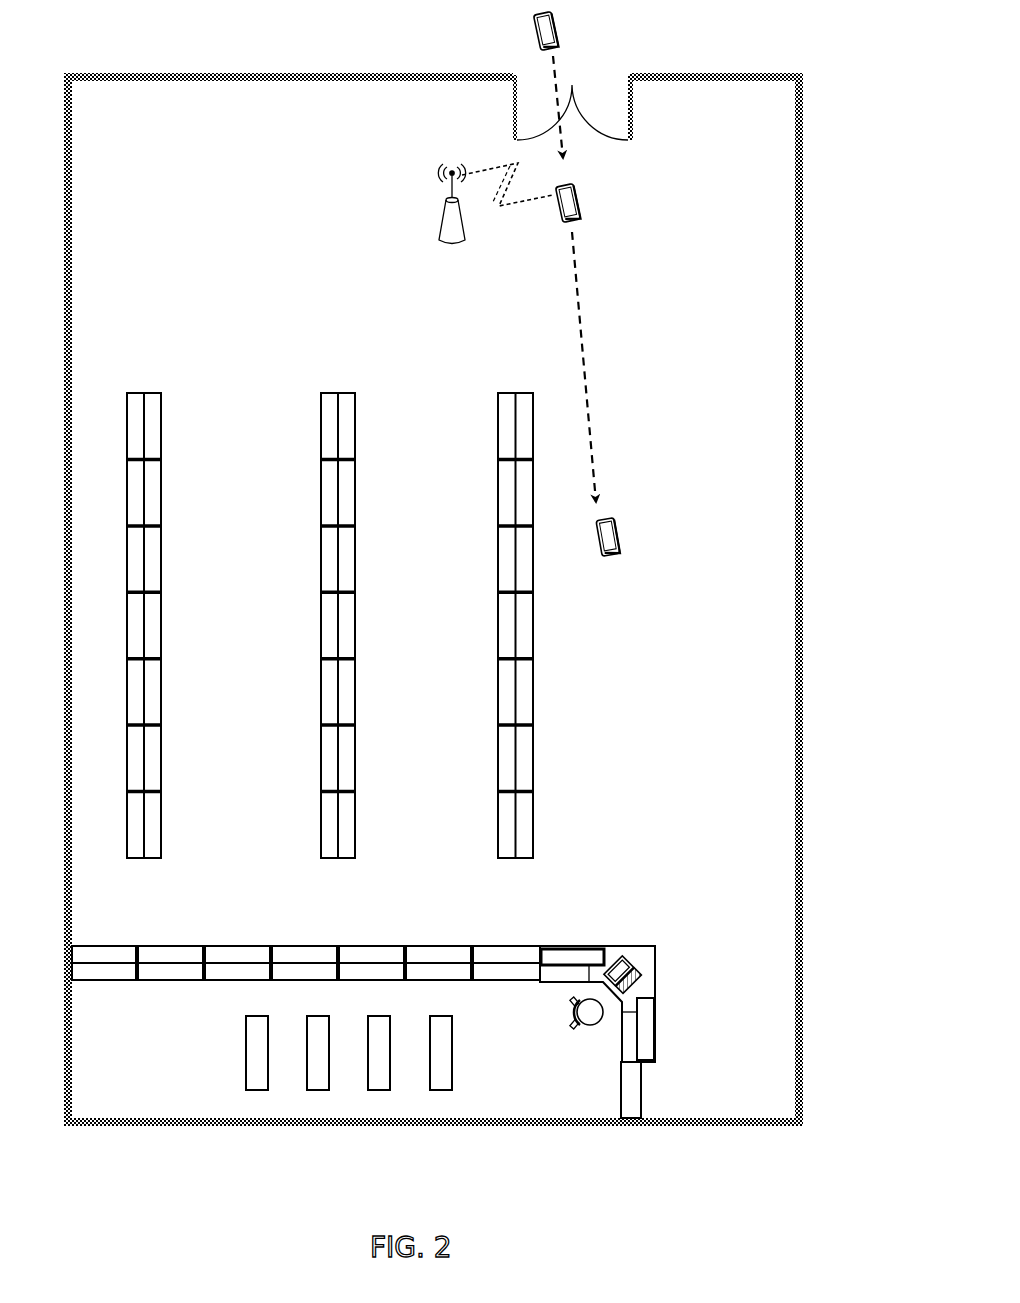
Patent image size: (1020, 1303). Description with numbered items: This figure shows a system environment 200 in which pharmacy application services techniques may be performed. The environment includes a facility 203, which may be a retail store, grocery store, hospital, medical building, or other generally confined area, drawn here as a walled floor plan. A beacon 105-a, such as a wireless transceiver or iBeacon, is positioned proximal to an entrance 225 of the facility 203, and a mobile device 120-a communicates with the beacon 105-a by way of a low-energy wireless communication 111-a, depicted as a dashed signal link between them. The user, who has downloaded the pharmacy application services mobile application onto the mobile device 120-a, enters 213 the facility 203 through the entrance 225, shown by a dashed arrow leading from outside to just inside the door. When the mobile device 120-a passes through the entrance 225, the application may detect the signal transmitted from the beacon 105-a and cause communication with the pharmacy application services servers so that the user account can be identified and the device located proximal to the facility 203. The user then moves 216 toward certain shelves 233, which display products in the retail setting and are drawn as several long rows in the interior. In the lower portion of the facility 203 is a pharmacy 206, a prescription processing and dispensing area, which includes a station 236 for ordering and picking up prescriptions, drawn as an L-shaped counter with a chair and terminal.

The system environment 200 is at (433, 613).
The facility 203 is at (177, 141).
The pharmacy 206 is at (540, 1079).
The beacon 105-a is at (463, 240).
The low-energy wireless communication 111-a is at (506, 165).
The mobile device 120-a is at (556, 34).
The enters 213 is at (553, 78).
The moves 216 is at (585, 378).
The entrance 225 is at (633, 105).
The shelves 233 is at (161, 760).
The station 236 is at (607, 946).